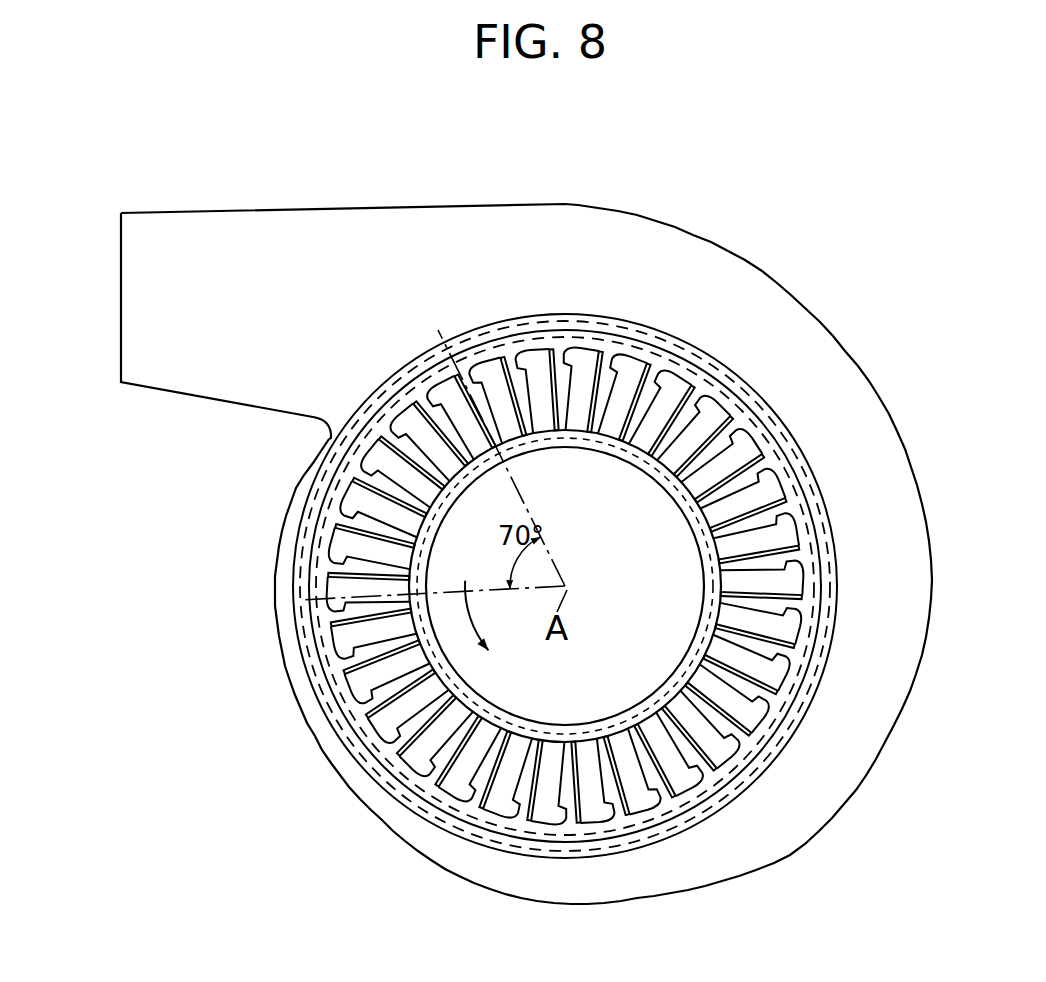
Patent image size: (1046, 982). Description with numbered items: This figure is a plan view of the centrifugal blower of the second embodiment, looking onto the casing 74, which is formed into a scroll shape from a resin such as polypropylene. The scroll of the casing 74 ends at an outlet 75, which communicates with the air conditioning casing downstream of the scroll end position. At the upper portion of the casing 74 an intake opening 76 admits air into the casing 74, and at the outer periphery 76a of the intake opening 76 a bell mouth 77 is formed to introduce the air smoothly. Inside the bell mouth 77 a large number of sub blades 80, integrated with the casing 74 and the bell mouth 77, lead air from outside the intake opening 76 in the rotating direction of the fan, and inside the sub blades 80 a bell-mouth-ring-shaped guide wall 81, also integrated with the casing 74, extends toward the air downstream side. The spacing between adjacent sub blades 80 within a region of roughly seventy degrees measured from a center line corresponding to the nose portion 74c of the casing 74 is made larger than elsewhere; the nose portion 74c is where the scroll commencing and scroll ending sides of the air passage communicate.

The casing 74 is at (762, 267).
The nose portion 74c is at (310, 447).
The outlet 75 is at (140, 358).
The intake opening 76 is at (528, 676).
The outer periphery of the intake opening 76a is at (657, 787).
The bell mouth 77 is at (700, 773).
The sub blades 80 is at (573, 733).
The guide wall 81 is at (393, 743).